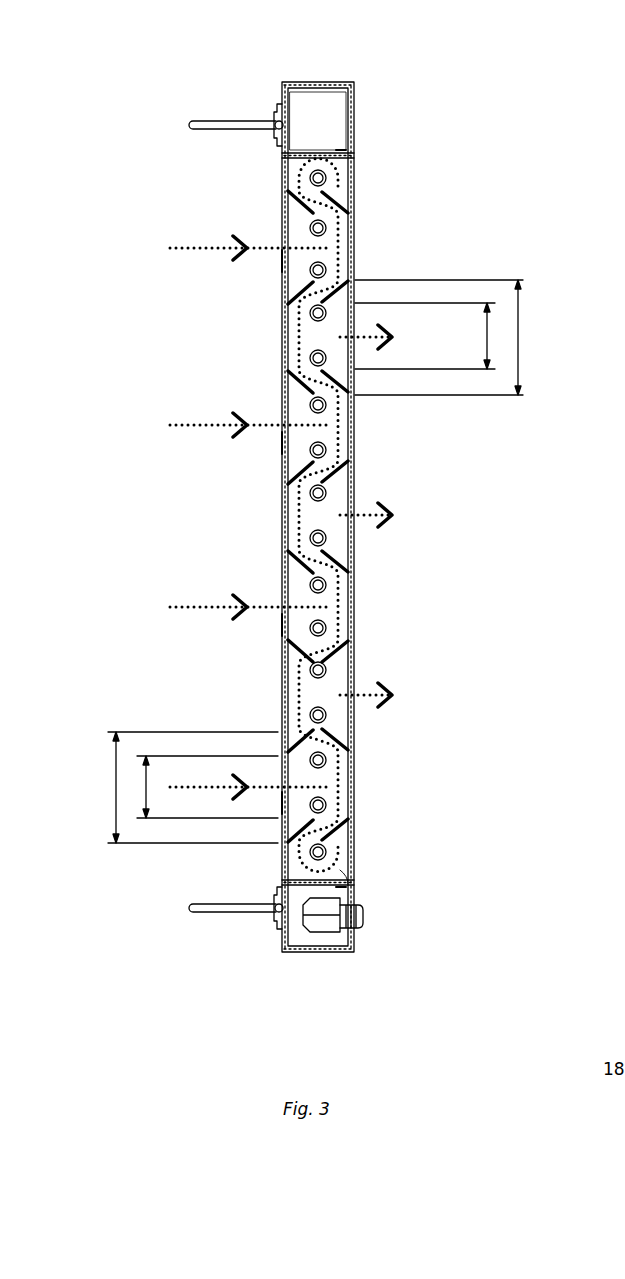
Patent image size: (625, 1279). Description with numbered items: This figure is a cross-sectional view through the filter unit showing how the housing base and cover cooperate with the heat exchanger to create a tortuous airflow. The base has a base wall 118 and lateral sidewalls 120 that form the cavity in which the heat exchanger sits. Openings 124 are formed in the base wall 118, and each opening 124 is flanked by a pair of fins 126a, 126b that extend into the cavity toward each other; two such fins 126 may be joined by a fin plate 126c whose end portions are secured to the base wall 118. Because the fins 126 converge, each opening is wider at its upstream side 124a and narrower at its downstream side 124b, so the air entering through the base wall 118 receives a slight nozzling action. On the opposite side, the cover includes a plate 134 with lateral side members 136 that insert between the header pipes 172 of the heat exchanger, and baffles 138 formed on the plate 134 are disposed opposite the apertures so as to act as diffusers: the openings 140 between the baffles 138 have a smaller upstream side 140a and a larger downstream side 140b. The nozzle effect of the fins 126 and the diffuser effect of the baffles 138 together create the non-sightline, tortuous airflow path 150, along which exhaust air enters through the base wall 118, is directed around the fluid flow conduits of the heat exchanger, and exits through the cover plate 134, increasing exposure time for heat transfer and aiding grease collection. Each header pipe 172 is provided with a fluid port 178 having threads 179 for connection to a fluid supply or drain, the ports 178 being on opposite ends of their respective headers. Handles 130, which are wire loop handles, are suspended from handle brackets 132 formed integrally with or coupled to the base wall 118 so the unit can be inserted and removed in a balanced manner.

The base wall 118 is at (282, 173).
The lateral sidewalls 120 is at (331, 82).
The openings 124 is at (299, 262).
The upstream side of opening 124a is at (116, 780).
The downstream side of opening 124b is at (146, 790).
The fins 126 is at (300, 201).
The fin 126a is at (298, 379).
The fin 126b is at (298, 474).
The fin plate 126c is at (297, 558).
The handles 130 is at (212, 121).
The handle brackets 132 is at (275, 107).
The plate 134 is at (356, 864).
The lateral side members 136 is at (347, 155).
The baffles 138 is at (352, 201).
The openings 140 is at (343, 314).
The upstream side of opening 140a is at (487, 338).
The downstream side of opening 140b is at (518, 327).
The tortuous airflow path 150 is at (171, 247).
The header pipes 172 is at (333, 122).
The fluid port 178 is at (332, 931).
The threads 179 is at (356, 928).